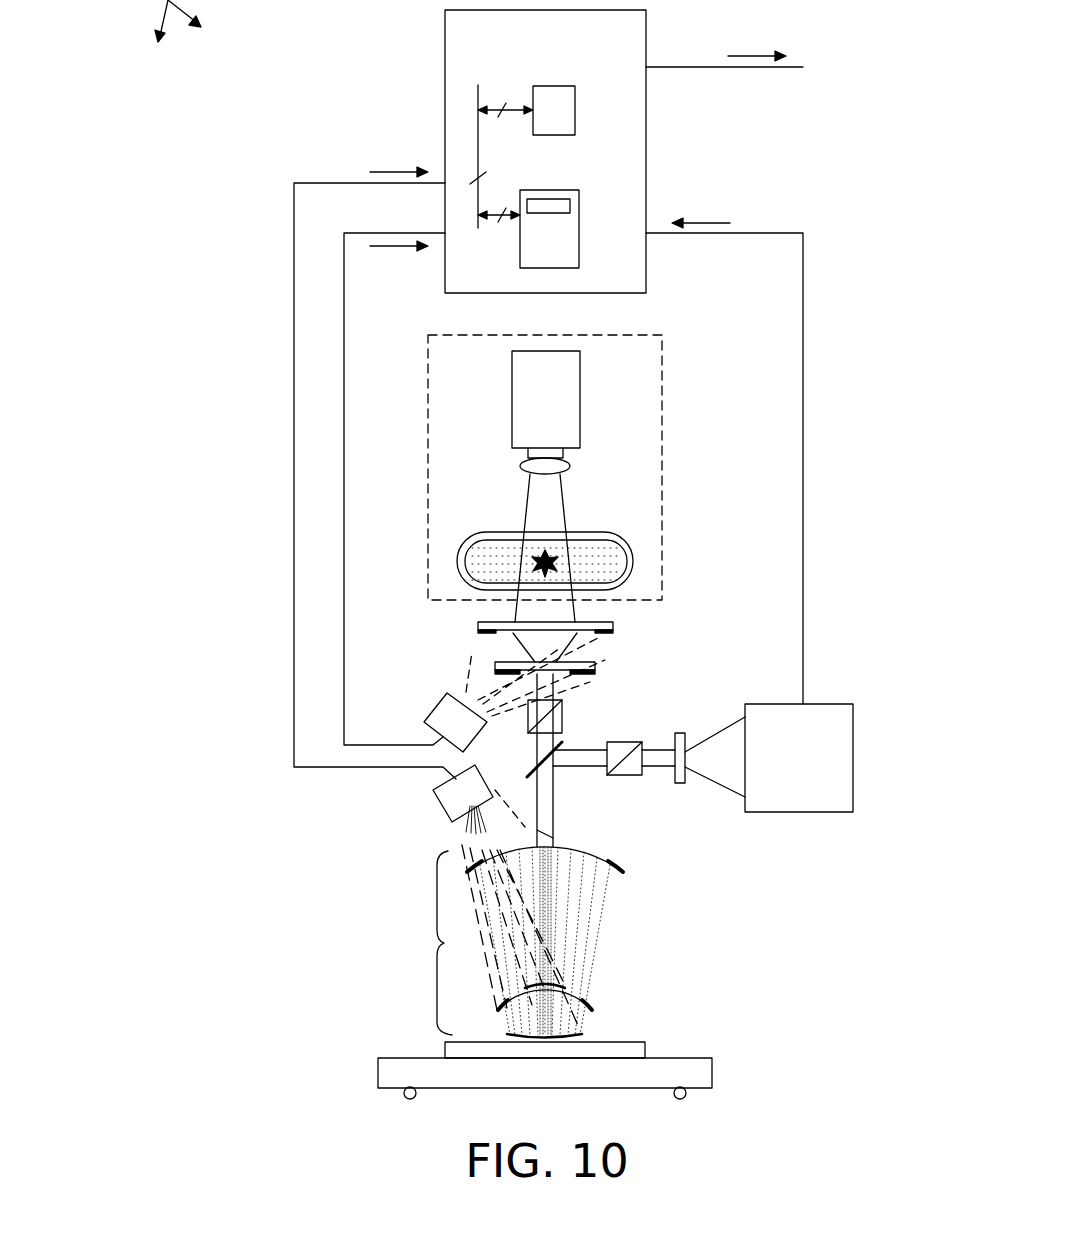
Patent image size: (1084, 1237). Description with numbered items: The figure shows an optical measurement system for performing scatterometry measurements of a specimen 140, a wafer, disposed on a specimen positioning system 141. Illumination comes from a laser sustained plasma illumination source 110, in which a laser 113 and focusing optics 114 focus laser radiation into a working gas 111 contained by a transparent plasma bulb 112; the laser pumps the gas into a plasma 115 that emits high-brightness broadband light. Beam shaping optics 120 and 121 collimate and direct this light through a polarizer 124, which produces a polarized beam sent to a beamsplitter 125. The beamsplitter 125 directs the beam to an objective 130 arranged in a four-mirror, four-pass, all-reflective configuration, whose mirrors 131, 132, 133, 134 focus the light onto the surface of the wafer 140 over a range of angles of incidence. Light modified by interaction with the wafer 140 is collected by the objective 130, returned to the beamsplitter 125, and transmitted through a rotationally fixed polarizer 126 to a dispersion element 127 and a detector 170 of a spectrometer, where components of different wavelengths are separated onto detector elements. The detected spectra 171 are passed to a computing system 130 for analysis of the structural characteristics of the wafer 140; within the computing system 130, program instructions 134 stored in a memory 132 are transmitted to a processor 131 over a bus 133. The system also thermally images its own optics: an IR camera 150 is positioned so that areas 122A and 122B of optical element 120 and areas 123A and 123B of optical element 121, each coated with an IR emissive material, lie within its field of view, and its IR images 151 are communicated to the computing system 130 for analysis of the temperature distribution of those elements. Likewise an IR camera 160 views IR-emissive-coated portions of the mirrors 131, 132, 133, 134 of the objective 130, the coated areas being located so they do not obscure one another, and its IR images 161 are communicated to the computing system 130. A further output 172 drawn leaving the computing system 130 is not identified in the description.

The laser sustained plasma illumination source 110 is at (662, 407).
The working gas 111 is at (546, 561).
The transparent bulb 112 is at (475, 532).
The laser 113 is at (546, 404).
The focusing optics 114 is at (570, 466).
The plasma 115 is at (550, 560).
The beam shaping optic 120 is at (478, 624).
The beam shaping optic 121 is at (595, 663).
The IR emissive coated area 122A is at (478, 632).
The IR emissive coated area 122B is at (613, 633).
The IR emissive coated area 123A is at (495, 672).
The IR emissive coated area 123B is at (595, 673).
The polarizer 124 is at (562, 717).
The beamsplitter 125 is at (535, 770).
The polarizer 126 is at (625, 775).
The dispersion element 127 is at (680, 783).
The objective; computing system 130 is at (412, 943).
The mirror; processor 131 is at (575, 110).
The mirror; memory 132 is at (520, 257).
The mirror; bus 133 is at (480, 152).
The mirror; program instructions 134 is at (570, 206).
The specimen 140 is at (645, 1050).
The specimen positioning system 141 is at (712, 1073).
The IR camera 150 is at (514, 694).
The IR images 151 is at (397, 247).
The IR camera 160 is at (506, 897).
The IR images 161 is at (392, 172).
The detector 170 is at (799, 758).
The detected spectra 171 is at (702, 223).
The output signal 172 is at (752, 56).